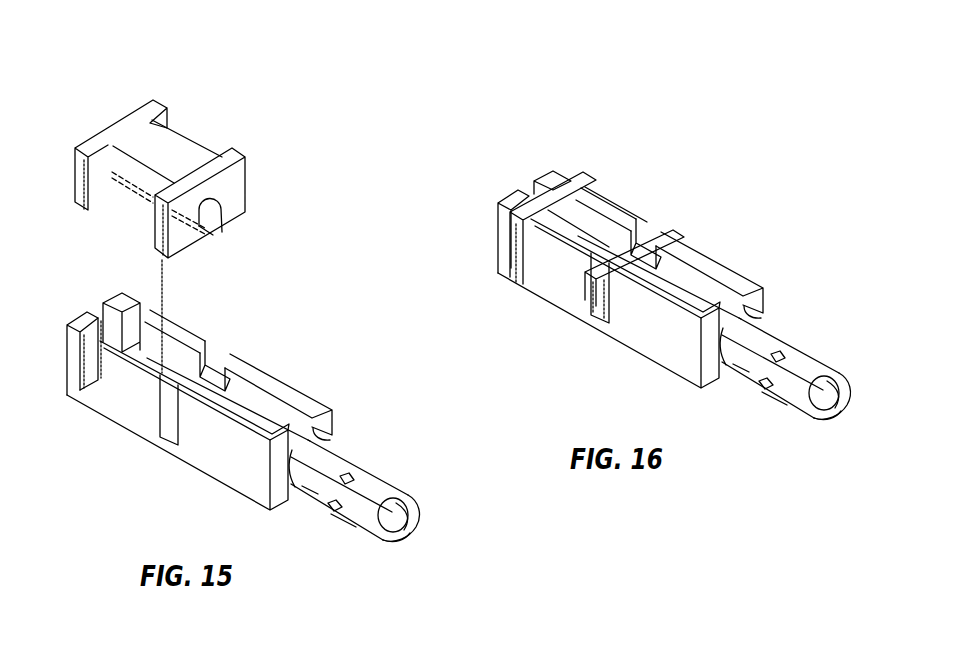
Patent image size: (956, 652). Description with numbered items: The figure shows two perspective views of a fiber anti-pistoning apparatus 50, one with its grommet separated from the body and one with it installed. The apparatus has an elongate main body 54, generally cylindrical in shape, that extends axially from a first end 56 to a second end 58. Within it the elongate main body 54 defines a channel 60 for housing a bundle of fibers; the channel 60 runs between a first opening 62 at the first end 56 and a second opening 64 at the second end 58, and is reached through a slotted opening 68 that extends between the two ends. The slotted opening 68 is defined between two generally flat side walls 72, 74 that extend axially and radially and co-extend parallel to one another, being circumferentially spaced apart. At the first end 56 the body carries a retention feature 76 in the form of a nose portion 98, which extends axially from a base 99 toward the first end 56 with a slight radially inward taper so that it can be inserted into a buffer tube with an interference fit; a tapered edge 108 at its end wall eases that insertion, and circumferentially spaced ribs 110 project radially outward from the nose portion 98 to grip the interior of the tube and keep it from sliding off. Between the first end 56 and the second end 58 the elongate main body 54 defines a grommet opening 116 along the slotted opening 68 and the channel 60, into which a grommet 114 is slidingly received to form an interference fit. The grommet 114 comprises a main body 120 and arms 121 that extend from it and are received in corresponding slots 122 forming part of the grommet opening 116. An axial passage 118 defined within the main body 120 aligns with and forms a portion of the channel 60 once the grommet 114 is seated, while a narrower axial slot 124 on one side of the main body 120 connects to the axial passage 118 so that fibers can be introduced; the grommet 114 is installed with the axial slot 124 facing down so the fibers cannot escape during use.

In FIG. 15, the fiber anti-pistoning apparatus 50 is at (94, 72).
In FIG. 16, the fiber anti-pistoning apparatus 50 is at (551, 129).
In FIG. 15, the elongate main body 54 is at (222, 468).
In FIG. 16, the elongate main body 54 is at (667, 358).
In FIG. 15, the first end 56 is at (417, 513).
In FIG. 16, the first end 56 is at (847, 401).
In FIG. 15, the second end 58 is at (66, 396).
In FIG. 16, the second end 58 is at (497, 274).
In FIG. 15, the channel 60 is at (368, 478).
In FIG. 16, the channel 60 is at (798, 364).
In FIG. 15, the first opening 62 is at (403, 528).
In FIG. 16, the first opening 62 is at (836, 411).
In FIG. 15, the second opening 64 is at (62, 300).
In FIG. 16, the second opening 64 is at (497, 192).
In FIG. 15, the slotted opening 68 is at (274, 405).
In FIG. 16, the slotted opening 68 is at (706, 295).
In FIG. 15, the side wall 72 is at (250, 360).
In FIG. 16, the side wall 72 is at (677, 267).
In FIG. 15, the side wall 74 is at (188, 447).
In FIG. 16, the side wall 74 is at (647, 300).
In FIG. 15, the retention feature 76 is at (414, 466).
In FIG. 16, the retention feature 76 is at (845, 352).
In FIG. 15, the nose portion 98 is at (361, 524).
In FIG. 16, the nose portion 98 is at (788, 406).
In FIG. 15, the base 99 is at (290, 500).
In FIG. 16, the base 99 is at (722, 383).
In FIG. 15, the tapered edge 108 is at (380, 547).
In FIG. 16, the tapered edge 108 is at (813, 427).
In FIG. 15, the ribs 110 is at (333, 512).
In FIG. 16, the ribs 110 is at (764, 393).
In FIG. 15, the grommet 114 is at (216, 92).
In FIG. 16, the grommet 114 is at (613, 230).
In FIG. 15, the grommet opening 116 is at (173, 356).
In FIG. 15, the axial passage 118 is at (214, 210).
In FIG. 15, the main body 120 is at (181, 147).
In FIG. 16, the main body 120 is at (592, 220).
In FIG. 15, the arms 121 is at (82, 180).
In FIG. 16, the arms 121 is at (510, 252).
In FIG. 15, the slots 122 is at (88, 367).
In FIG. 16, the slots 122 is at (646, 244).
In FIG. 15, the axial slot 124 is at (212, 237).